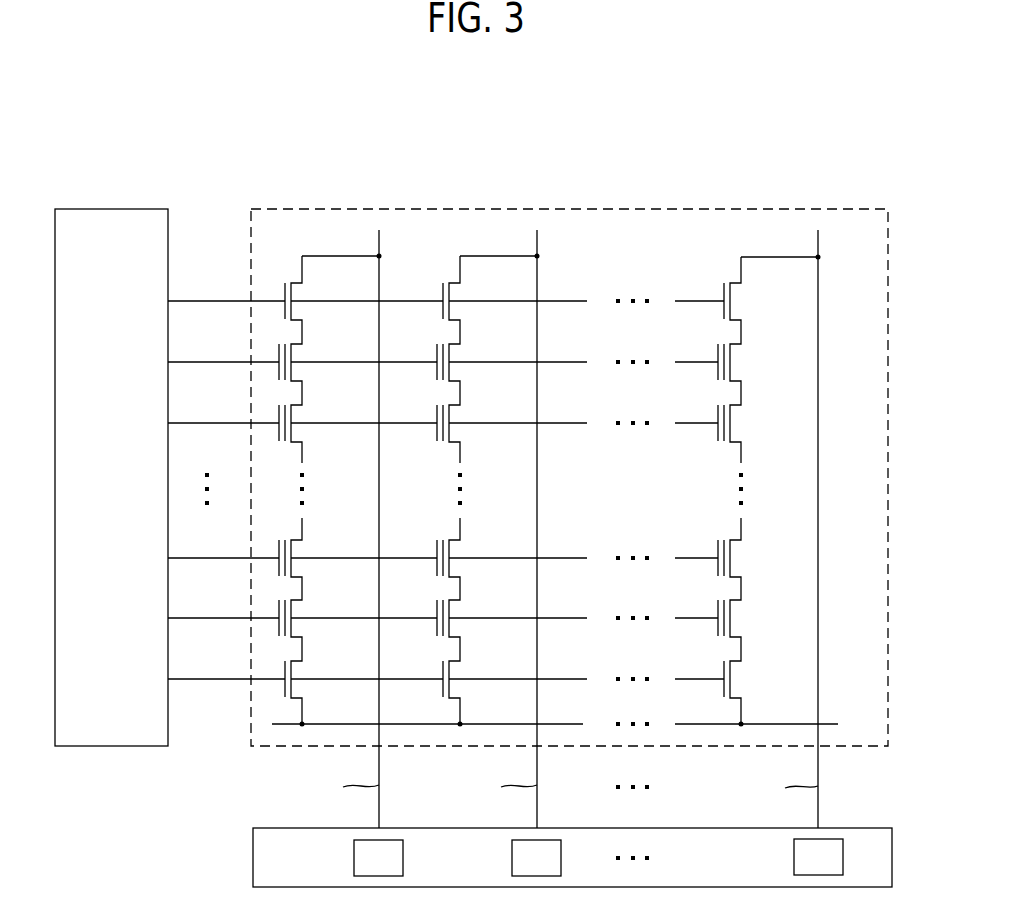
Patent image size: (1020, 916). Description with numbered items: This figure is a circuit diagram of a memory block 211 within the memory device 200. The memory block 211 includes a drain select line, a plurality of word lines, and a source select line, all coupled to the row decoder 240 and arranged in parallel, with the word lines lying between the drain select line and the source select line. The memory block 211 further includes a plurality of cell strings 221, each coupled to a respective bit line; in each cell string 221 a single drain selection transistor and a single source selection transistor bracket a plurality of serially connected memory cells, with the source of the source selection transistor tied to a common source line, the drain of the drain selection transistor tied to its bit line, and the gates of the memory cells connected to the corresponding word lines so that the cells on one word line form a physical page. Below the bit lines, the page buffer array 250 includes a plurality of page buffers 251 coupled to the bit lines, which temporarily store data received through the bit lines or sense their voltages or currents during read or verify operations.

The memory device 200 is at (833, 116).
The memory block 211 is at (782, 209).
The cell string 221 is at (293, 249).
The row decoder 240 is at (113, 209).
The page buffer array 250 is at (253, 856).
The page buffer 251 is at (354, 856).